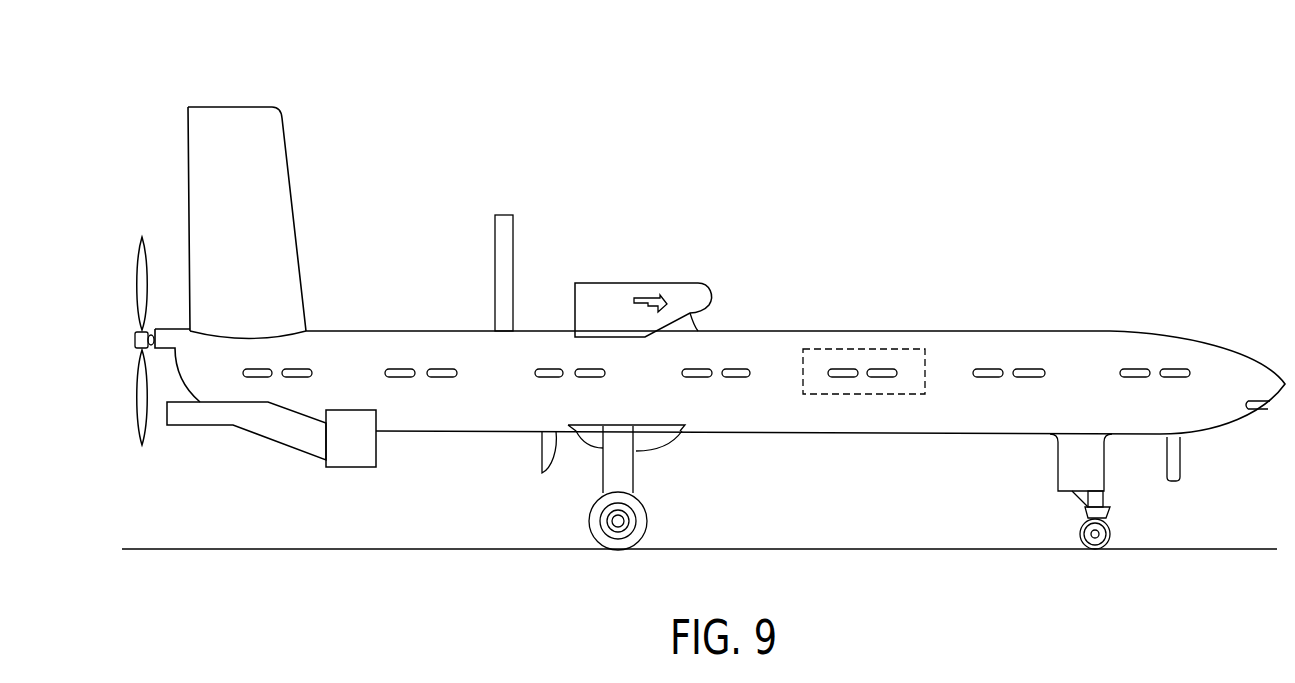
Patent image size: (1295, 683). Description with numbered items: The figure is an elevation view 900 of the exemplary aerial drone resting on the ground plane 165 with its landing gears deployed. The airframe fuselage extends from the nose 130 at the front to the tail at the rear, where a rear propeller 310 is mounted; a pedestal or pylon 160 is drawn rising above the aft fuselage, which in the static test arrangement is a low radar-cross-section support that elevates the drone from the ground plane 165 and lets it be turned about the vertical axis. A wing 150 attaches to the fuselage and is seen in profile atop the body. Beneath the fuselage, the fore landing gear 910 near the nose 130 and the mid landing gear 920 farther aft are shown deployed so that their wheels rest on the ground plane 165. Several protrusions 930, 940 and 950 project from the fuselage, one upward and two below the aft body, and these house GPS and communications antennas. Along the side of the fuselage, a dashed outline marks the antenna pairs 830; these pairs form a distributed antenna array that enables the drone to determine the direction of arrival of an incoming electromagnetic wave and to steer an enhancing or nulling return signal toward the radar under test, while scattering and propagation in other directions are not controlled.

The elevation view 900 is at (1157, 103).
The low RCS pedestal 160 is at (285, 152).
The rear propeller 310 is at (137, 257).
The protrusion 930 is at (507, 217).
The wing 150 is at (698, 282).
The antenna pairs 830 is at (887, 350).
The nose 130 is at (1248, 348).
The mid landing gear 920 is at (697, 445).
The fore landing gear 910 is at (1035, 445).
The protrusion 950 is at (200, 428).
The protrusion 940 is at (360, 468).
The ground plane 165 is at (316, 548).